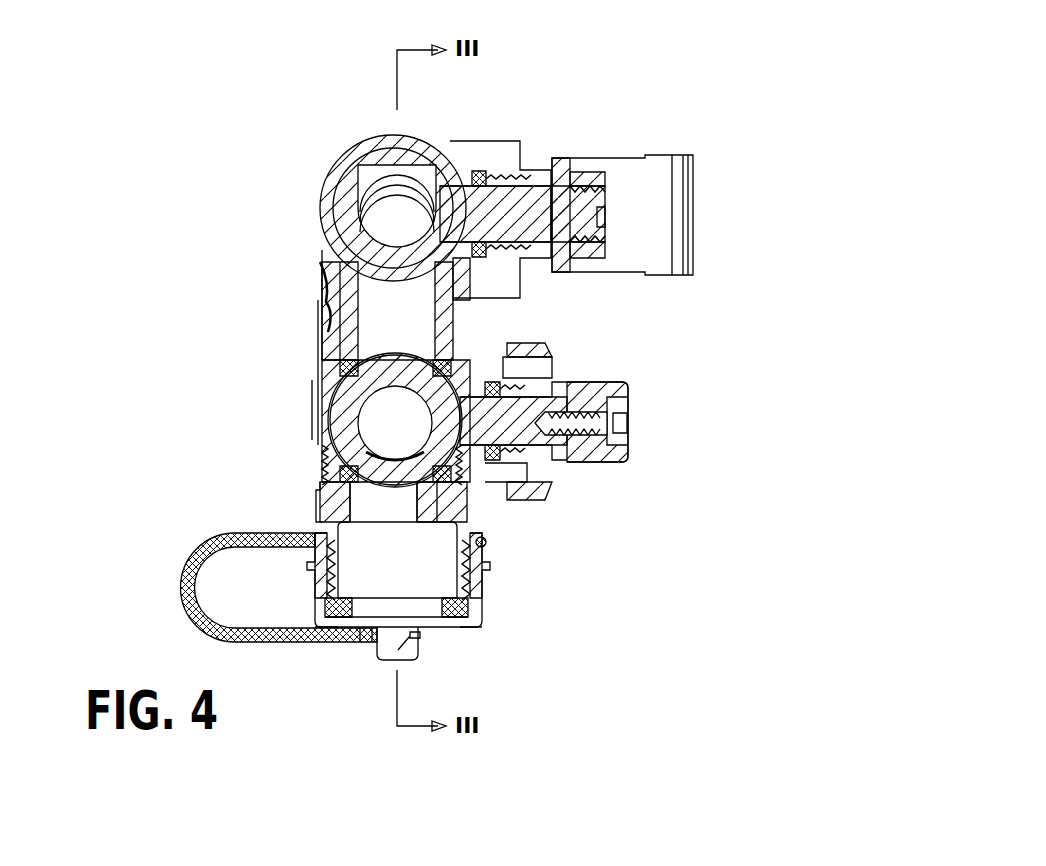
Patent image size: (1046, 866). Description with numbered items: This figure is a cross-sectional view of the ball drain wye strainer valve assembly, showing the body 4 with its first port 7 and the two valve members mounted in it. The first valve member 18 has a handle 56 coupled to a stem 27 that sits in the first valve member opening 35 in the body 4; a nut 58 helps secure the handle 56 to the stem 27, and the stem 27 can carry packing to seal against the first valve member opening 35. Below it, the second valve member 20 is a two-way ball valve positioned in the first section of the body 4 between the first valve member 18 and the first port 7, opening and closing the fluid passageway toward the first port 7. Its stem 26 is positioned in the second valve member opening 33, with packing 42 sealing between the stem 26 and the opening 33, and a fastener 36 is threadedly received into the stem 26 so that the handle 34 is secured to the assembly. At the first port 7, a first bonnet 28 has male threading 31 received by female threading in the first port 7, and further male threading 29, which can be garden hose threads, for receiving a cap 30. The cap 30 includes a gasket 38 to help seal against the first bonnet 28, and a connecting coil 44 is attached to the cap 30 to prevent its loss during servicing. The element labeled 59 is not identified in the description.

The body 4 is at (322, 252).
The first port 7 is at (318, 446).
The first valve member 18 is at (632, 154).
The second valve member 20 is at (600, 378).
The stem 26 is at (515, 433).
The stem 27 is at (510, 210).
The first bonnet 28 is at (340, 508).
The male threading 29 is at (478, 588).
The cap 30 is at (480, 622).
The male threading 31 is at (330, 468).
The second valve member opening 33 is at (478, 392).
The handle 34 is at (592, 450).
The first valve member opening 35 is at (498, 206).
The fastener 36 is at (626, 424).
The gasket 38 is at (338, 612).
The packing 42 is at (510, 370).
The connecting coil 44 is at (484, 543).
The handle 56 is at (653, 208).
The nut 58 is at (580, 192).
The seal 59 is at (534, 178).